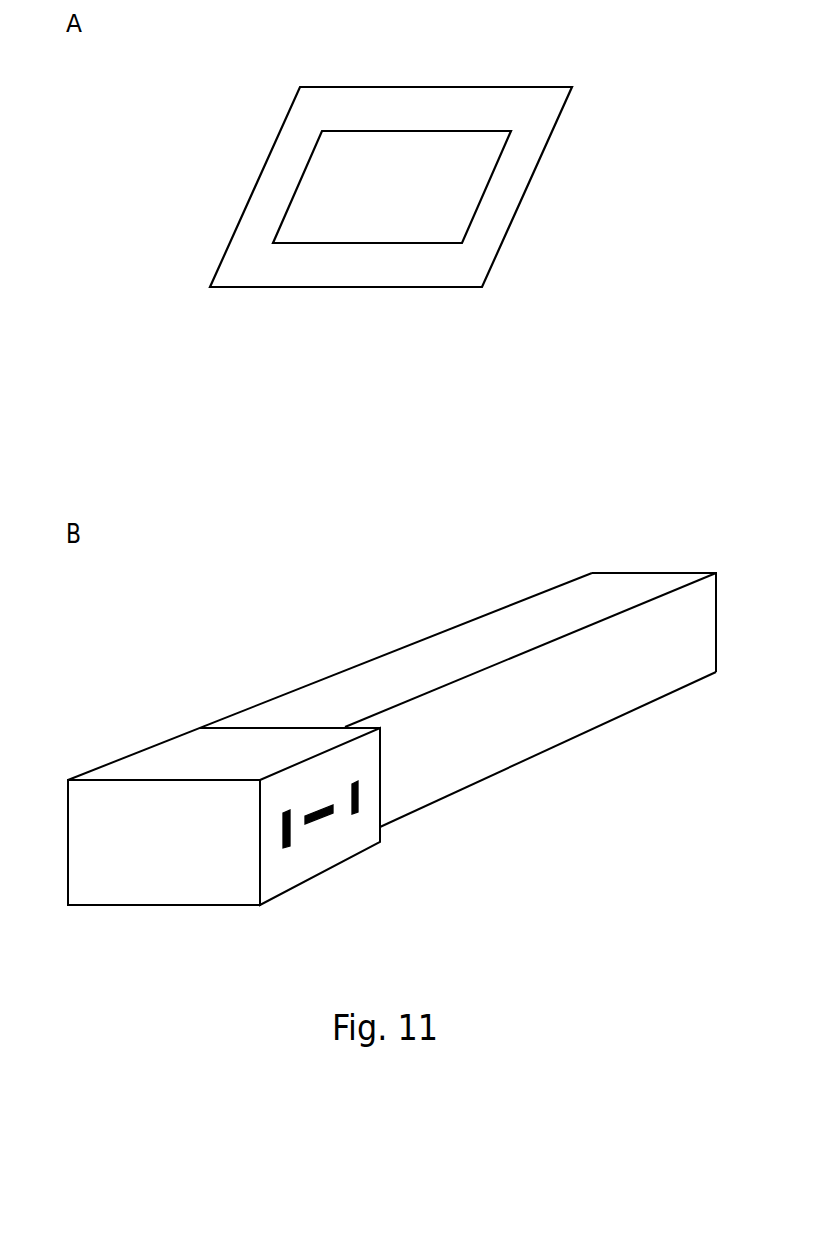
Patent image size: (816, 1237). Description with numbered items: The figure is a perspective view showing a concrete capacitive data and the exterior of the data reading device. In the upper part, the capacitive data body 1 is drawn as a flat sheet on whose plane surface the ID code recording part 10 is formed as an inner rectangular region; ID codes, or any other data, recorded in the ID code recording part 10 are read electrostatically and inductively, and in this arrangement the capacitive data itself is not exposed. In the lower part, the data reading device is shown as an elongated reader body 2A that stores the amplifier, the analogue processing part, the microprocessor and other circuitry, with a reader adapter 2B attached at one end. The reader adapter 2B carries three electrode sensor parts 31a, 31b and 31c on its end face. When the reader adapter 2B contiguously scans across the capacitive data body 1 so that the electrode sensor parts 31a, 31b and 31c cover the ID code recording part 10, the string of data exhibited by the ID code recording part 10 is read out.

The capacitive data body 1 is at (560, 113).
The ID code recording part 10 is at (495, 167).
The reader body 2A is at (382, 667).
The reader adapter 2B is at (163, 752).
The electrode sensor part 31a is at (318, 824).
The electrode sensor part 31b is at (287, 848).
The electrode sensor part 31c is at (358, 807).